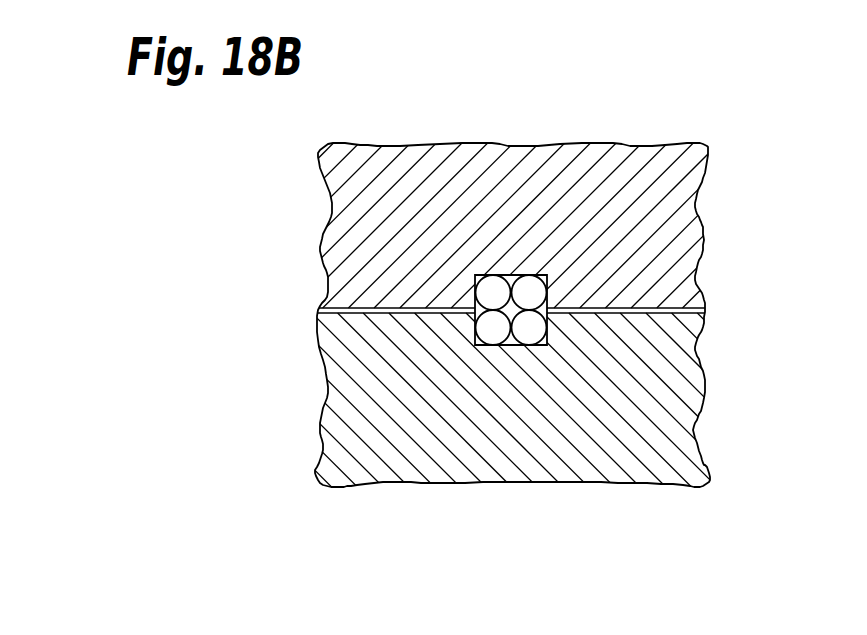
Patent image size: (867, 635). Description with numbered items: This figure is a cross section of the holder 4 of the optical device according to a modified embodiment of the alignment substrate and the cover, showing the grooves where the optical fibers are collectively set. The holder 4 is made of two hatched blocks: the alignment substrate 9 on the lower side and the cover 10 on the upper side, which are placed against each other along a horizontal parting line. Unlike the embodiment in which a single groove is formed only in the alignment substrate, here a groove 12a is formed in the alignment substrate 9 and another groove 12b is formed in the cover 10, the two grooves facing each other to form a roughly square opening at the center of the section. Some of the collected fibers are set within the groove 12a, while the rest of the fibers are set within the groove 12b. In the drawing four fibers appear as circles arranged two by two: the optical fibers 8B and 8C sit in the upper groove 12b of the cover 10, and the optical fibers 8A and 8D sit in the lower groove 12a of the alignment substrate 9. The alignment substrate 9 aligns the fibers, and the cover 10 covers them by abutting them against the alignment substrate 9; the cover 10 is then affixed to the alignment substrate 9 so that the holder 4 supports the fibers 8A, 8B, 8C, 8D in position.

The holder 4 is at (648, 143).
The cover 10 is at (602, 172).
The alignment substrate 9 is at (607, 463).
The groove 12a is at (502, 345).
The groove 12b is at (508, 275).
The optical fiber 8A is at (493, 333).
The optical fiber 8B is at (493, 288).
The optical fiber 8C is at (527, 288).
The optical fiber 8D is at (528, 333).